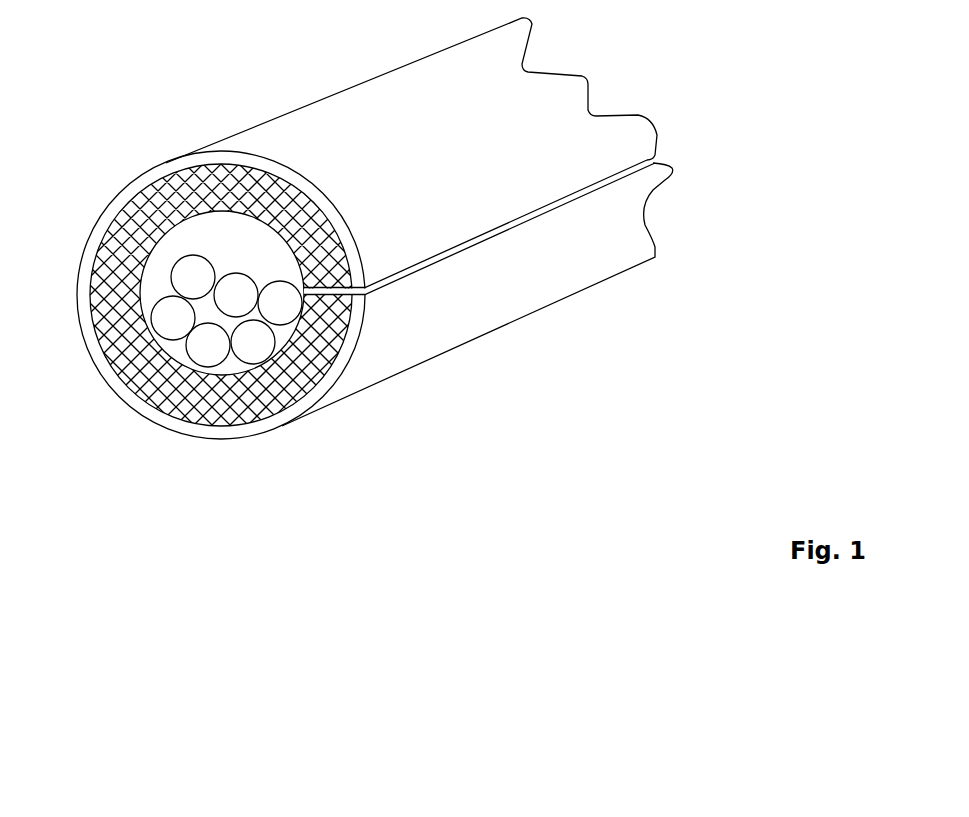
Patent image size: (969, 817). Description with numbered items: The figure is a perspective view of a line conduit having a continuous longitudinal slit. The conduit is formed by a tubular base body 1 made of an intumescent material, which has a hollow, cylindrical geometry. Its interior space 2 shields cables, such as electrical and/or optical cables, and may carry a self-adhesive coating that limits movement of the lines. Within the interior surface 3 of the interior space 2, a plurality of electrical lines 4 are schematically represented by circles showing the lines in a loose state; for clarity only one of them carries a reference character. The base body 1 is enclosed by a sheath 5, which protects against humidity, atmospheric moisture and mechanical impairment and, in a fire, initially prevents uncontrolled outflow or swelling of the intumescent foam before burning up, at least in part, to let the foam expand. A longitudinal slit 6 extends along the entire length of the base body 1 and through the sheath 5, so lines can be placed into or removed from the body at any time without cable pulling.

The tubular base body 1 is at (205, 160).
The interior space 2 is at (220, 255).
The interior surface 3 is at (172, 250).
The electrical lines 4 is at (257, 342).
The sheath 5 is at (107, 218).
The longitudinal slit 6 is at (653, 162).